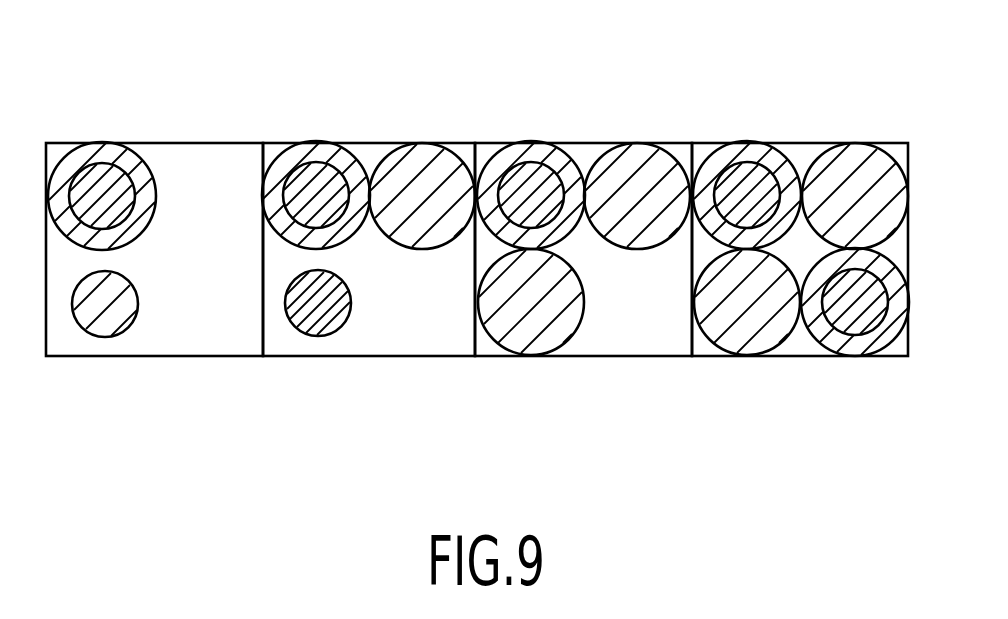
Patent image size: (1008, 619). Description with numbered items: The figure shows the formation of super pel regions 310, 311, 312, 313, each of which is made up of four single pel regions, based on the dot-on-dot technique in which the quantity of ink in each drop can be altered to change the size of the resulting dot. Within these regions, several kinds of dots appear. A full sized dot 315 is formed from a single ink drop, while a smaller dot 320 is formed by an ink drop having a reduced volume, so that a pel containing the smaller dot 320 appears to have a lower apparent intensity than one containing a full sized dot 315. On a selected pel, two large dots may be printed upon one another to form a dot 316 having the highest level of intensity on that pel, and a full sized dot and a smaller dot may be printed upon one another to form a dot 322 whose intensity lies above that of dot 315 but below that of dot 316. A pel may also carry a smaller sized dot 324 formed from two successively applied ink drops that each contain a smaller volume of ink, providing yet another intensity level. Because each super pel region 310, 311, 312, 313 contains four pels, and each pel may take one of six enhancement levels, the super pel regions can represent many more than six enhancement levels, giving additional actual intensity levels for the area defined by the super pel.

The super pel region 310 is at (165, 372).
The super pel region 311 is at (377, 372).
The super pel region 312 is at (608, 372).
The super pel region 313 is at (803, 372).
The full sized dot 315 is at (425, 152).
The dot 316 is at (635, 152).
The smaller dot 320 is at (100, 323).
The dot 322 is at (108, 163).
The smaller sized dot 324 is at (316, 327).